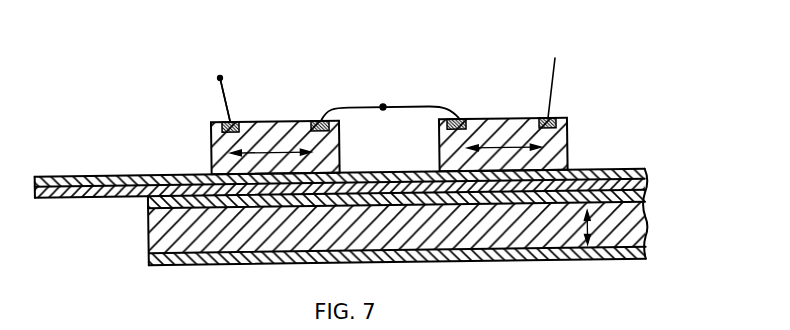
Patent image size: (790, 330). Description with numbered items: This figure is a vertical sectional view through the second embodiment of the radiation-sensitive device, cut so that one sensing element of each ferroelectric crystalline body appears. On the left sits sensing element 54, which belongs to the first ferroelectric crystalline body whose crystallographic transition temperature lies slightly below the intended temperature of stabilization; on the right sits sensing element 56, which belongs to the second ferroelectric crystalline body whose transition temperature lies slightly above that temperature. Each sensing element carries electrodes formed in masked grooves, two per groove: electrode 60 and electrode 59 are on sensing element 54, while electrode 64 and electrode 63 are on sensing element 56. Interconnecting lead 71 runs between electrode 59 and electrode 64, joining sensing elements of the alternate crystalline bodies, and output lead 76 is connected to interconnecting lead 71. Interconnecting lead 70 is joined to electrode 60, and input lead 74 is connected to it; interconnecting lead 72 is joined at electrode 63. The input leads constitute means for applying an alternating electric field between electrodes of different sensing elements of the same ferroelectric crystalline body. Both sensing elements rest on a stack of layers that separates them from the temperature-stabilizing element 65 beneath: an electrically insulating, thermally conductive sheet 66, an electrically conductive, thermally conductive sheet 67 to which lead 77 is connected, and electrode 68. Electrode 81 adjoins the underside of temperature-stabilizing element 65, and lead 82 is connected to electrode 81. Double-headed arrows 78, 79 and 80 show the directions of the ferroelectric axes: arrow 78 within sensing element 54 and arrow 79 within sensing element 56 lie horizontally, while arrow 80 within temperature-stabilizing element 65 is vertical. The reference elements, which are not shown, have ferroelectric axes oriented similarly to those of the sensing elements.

The sensing element 54 is at (277, 120).
The sensing element 56 is at (505, 118).
The electrode 59 is at (318, 121).
The electrode 60 is at (235, 121).
The electrode 63 is at (552, 126).
The electrode 64 is at (457, 118).
The temperature-stabilizing element 65 is at (148, 227).
The electrically insulating, thermally conductive sheet 66 is at (645, 169).
The electrically conductive, thermally conductive sheet 67 is at (647, 182).
The electrode 68 is at (647, 197).
The interconnecting lead 70 is at (220, 78).
The interconnecting lead 71 is at (404, 108).
The interconnecting lead 72 is at (549, 118).
The input lead 74 is at (220, 78).
The output lead 76 is at (383, 107).
The lead 77 is at (67, 257).
The double-headed arrow 78 is at (245, 152).
The double-headed arrow 79 is at (540, 148).
The double-headed arrow 80 is at (595, 232).
The electrode 81 is at (263, 263).
The lead 82 is at (152, 313).